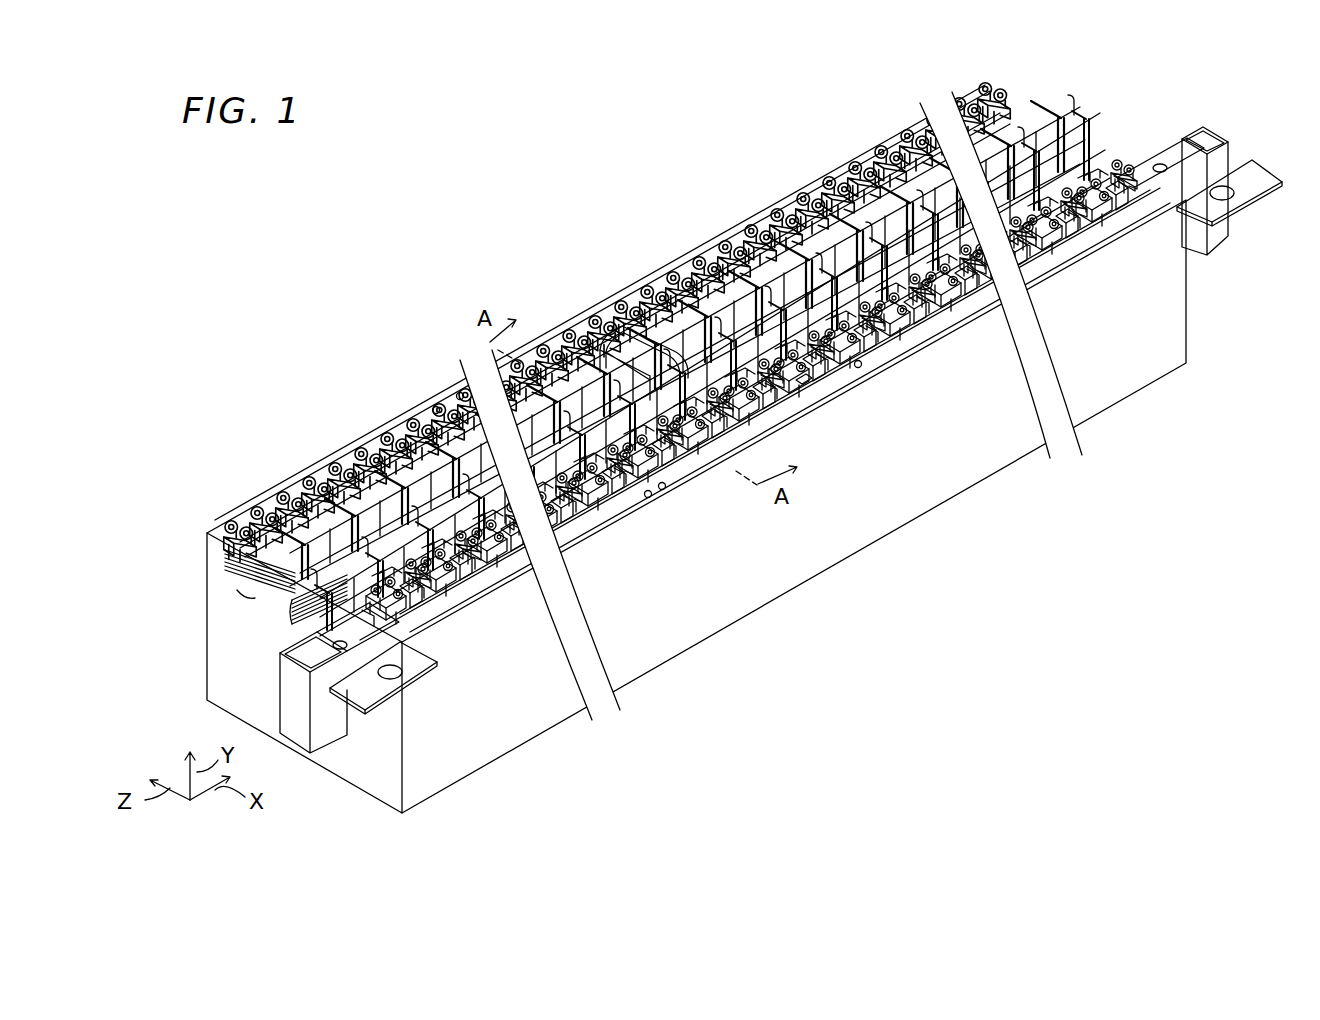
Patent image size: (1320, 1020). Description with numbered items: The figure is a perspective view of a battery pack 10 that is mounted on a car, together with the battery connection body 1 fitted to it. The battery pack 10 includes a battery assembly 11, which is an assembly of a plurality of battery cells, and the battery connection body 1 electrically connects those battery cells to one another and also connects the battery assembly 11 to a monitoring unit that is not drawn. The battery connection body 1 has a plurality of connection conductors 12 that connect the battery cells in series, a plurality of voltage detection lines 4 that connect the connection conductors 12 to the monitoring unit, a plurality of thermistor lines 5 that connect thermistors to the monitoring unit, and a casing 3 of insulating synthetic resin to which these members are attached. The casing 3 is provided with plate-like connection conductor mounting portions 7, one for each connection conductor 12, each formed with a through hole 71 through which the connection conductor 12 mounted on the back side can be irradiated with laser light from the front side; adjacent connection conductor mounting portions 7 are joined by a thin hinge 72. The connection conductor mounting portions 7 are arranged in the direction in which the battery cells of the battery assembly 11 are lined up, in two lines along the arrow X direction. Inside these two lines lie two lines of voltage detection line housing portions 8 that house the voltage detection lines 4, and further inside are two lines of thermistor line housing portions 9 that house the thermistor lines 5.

The battery connection body 1 is at (400, 410).
The casing 3 is at (757, 247).
The voltage detection line 4 is at (225, 565).
The thermistor line 5 is at (290, 598).
The connection conductor mounting portion 7 is at (662, 300).
The voltage detection line housing portion 8 is at (893, 248).
The thermistor line housing portion 9 is at (597, 362).
The battery pack 10 is at (927, 78).
The battery assembly 11 is at (335, 455).
The connection conductor 12 is at (460, 376).
The through hole 71 is at (805, 383).
The thin hinge 72 is at (703, 280).